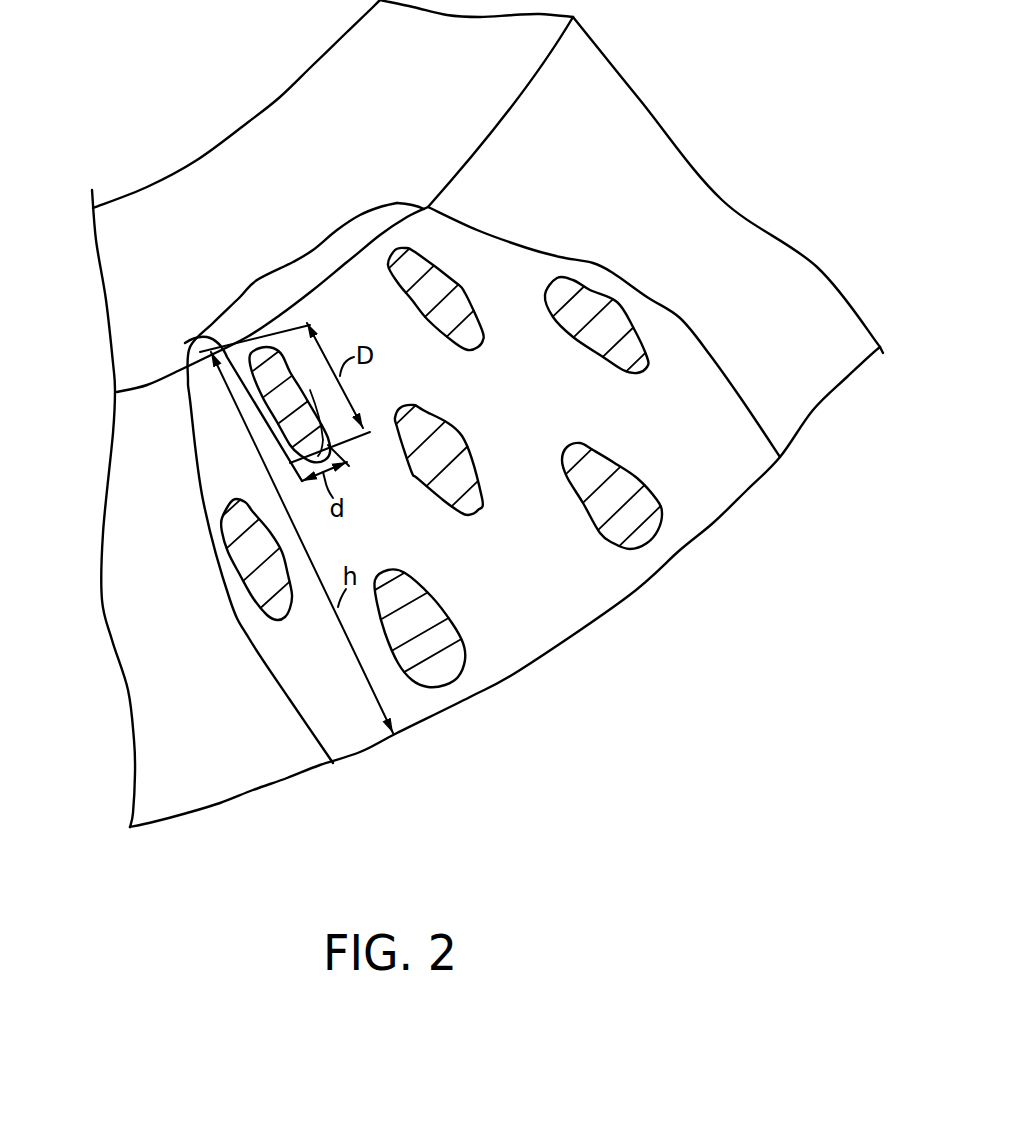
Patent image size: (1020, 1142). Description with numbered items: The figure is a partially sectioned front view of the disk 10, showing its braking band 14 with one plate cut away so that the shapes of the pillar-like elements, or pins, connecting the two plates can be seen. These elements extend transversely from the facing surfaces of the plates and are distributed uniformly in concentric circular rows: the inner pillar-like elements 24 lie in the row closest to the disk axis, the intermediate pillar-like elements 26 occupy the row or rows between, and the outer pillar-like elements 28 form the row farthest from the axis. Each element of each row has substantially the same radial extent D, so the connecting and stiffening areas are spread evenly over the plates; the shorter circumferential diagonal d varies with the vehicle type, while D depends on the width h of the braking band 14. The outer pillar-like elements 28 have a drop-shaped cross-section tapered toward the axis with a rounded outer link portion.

The disk 10 is at (165, 843).
The braking band 14 is at (626, 158).
The pillar-like elements of the inner row 24 is at (185, 343).
The pillar-like elements of the intermediate row 26 is at (451, 487).
The pillar-like elements of the outer row 28 is at (622, 533).